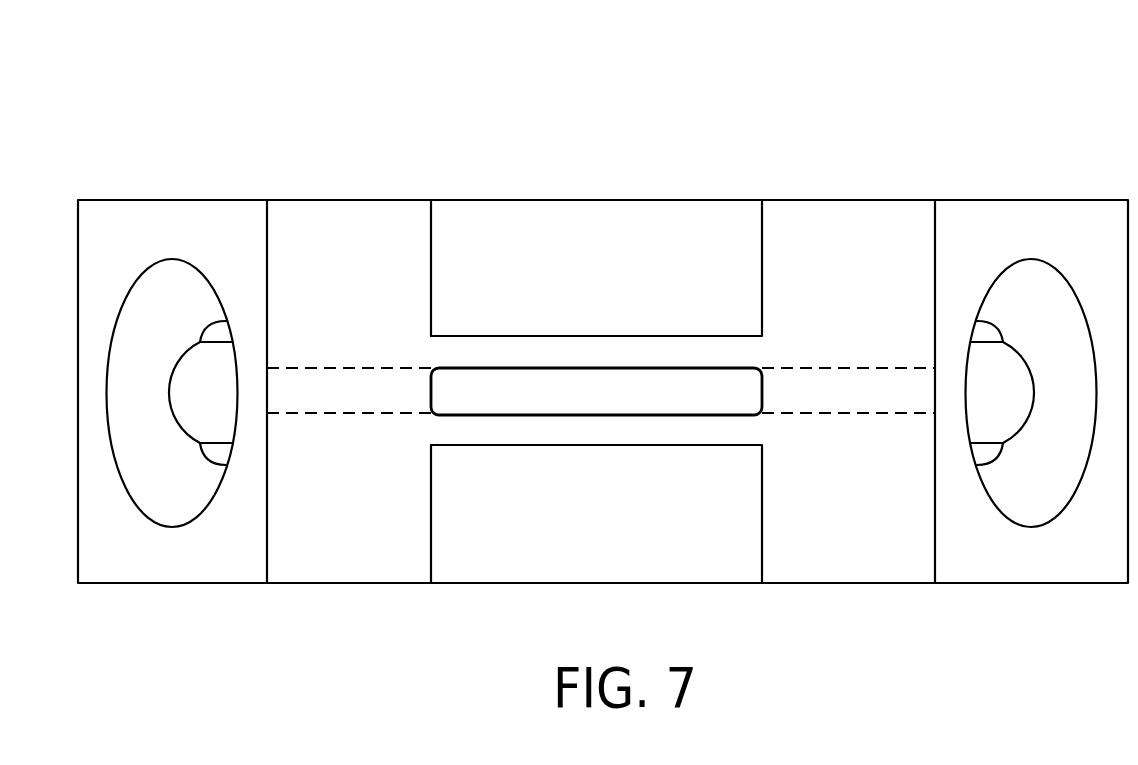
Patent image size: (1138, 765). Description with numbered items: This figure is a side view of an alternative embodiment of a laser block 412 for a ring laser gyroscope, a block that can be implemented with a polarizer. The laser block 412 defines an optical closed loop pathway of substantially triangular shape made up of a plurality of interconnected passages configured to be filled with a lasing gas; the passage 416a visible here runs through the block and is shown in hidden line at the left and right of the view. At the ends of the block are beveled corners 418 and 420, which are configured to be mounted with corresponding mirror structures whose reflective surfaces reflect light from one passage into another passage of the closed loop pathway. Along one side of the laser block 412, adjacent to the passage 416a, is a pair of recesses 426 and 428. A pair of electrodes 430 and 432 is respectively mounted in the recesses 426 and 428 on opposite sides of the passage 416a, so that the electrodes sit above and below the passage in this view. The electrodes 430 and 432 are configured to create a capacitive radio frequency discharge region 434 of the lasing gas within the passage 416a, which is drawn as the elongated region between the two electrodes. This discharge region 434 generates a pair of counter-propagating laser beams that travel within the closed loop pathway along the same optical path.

The laser block 412 is at (215, 118).
The beveled corner 418 is at (129, 568).
The beveled corner 420 is at (1007, 568).
The recess 426 is at (432, 241).
The recess 428 is at (432, 540).
The electrode 430 is at (635, 230).
The electrode 432 is at (635, 550).
The capacitive radio frequency discharge region 434 is at (735, 405).
The passage 416a is at (795, 395).